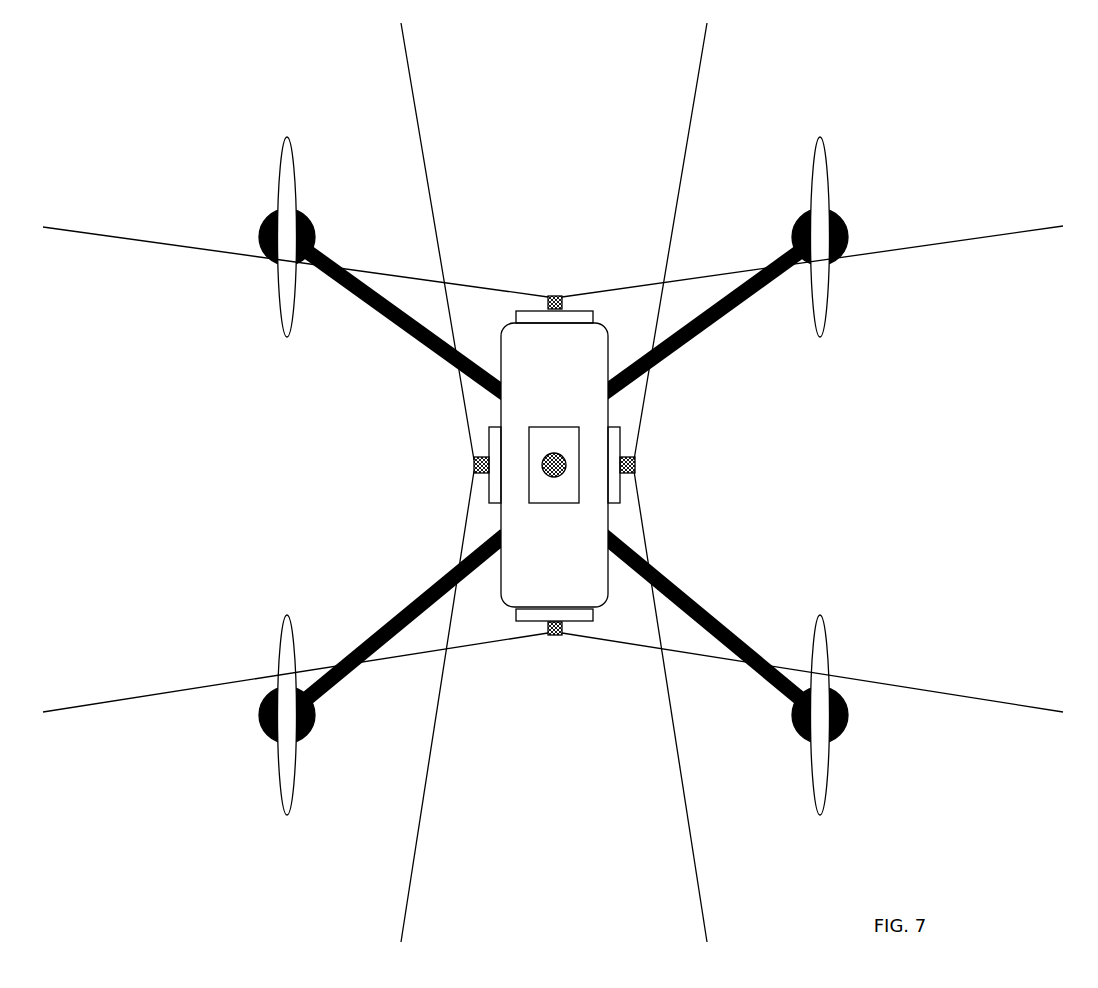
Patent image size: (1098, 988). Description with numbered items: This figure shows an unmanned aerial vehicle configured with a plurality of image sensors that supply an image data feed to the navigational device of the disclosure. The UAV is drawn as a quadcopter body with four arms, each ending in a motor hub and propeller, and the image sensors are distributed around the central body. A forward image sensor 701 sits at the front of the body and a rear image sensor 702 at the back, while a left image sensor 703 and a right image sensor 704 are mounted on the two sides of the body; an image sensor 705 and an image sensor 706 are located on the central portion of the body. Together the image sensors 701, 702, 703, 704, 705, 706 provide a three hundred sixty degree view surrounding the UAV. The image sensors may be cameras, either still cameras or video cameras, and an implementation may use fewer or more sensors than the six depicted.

The image sensor 701 is at (554, 296).
The image sensor 702 is at (554, 635).
The image sensor 703 is at (474, 465).
The image sensor 704 is at (635, 465).
The image sensor 705 is at (566, 470).
The image sensor 706 is at (542, 480).